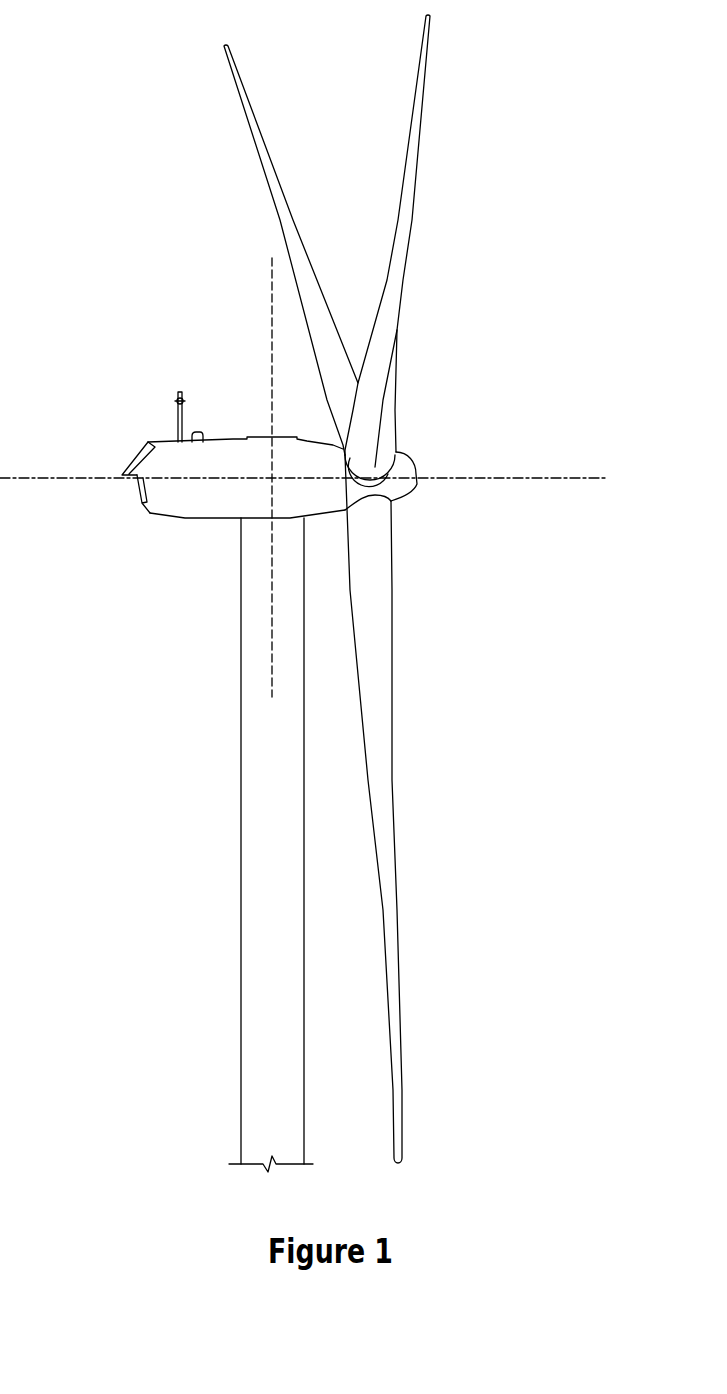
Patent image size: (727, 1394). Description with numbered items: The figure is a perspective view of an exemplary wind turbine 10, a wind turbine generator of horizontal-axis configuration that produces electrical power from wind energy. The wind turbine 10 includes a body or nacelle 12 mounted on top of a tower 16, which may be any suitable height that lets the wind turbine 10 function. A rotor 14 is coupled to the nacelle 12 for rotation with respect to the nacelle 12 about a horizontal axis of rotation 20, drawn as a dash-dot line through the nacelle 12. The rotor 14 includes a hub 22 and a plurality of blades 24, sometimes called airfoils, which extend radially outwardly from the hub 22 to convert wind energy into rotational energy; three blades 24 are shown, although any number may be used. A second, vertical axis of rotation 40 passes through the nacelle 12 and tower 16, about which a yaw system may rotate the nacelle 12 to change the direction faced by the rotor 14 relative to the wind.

The wind turbine 10 is at (129, 63).
The nacelle 12 is at (192, 518).
The rotor 14 is at (410, 530).
The tower 16 is at (240, 803).
The axis of rotation 20 is at (552, 480).
The hub 22 is at (417, 482).
The blade 24 is at (267, 143).
The axis of rotation 40 is at (271, 318).